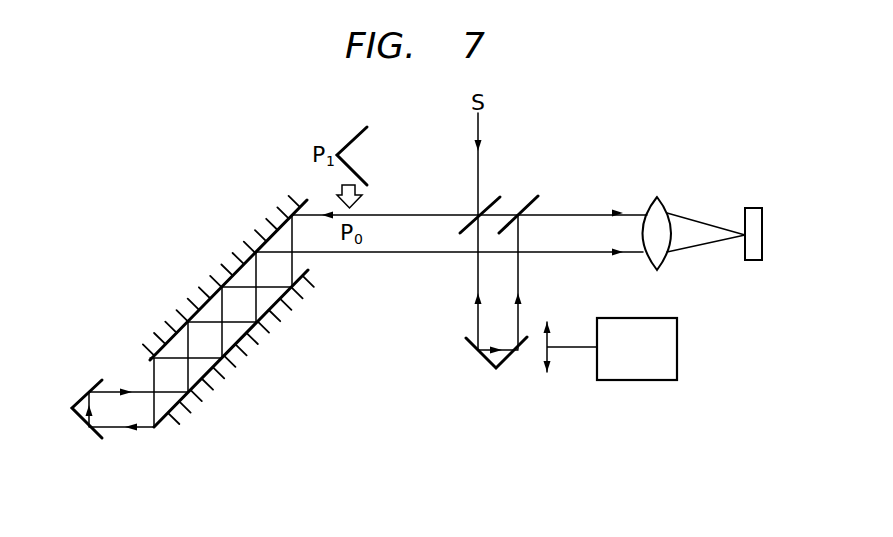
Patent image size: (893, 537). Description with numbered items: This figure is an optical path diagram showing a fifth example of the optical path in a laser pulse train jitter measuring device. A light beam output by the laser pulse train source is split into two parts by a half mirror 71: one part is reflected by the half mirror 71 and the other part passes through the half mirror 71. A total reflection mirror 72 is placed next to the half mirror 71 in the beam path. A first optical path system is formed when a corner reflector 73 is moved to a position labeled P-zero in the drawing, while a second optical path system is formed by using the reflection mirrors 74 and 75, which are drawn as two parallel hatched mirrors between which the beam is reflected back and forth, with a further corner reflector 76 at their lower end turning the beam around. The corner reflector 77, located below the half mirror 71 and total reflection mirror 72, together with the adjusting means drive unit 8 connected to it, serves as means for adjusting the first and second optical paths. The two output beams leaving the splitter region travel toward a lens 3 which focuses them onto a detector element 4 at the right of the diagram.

The lens 3 is at (660, 197).
The photodetector 4 is at (752, 207).
The drive unit 8 is at (658, 317).
The half mirror 71 is at (488, 195).
The total reflection mirror 72 is at (527, 197).
The corner reflector 73 is at (353, 127).
The reflection mirror 74 is at (241, 231).
The reflection mirror 75 is at (270, 347).
The corner reflector 76 is at (93, 380).
The corner reflector 77 is at (473, 357).